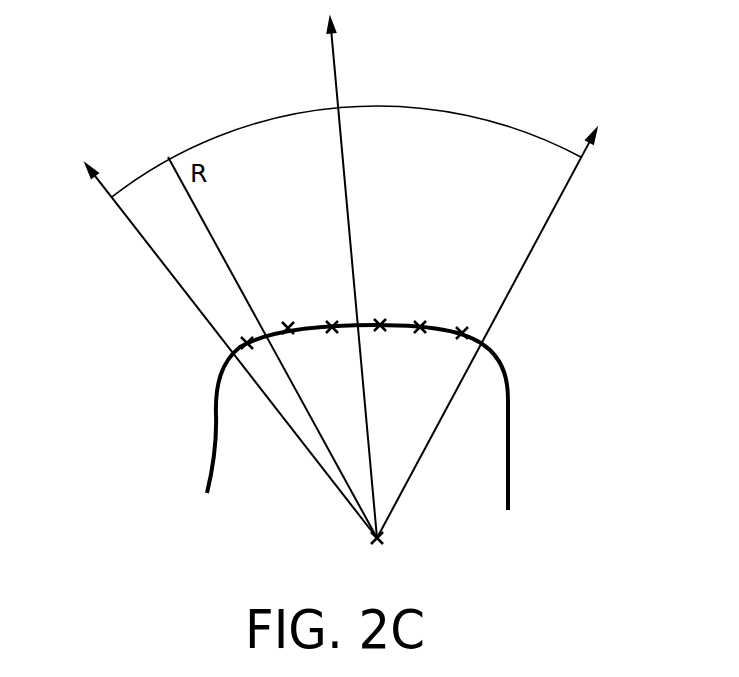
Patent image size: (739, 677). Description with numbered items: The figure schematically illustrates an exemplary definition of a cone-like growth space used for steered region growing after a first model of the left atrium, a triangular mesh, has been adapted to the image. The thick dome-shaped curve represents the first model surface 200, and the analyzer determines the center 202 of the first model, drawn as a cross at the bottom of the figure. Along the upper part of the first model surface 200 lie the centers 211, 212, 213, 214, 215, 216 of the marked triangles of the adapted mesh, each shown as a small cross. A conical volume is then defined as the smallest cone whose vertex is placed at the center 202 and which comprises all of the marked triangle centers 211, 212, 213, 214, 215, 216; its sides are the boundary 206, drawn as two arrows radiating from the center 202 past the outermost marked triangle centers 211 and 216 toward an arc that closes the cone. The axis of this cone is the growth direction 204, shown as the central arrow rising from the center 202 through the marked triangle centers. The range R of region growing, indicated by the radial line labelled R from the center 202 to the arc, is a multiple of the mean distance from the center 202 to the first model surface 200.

The first model surface 200 is at (213, 447).
The center 202 is at (371, 540).
The growth direction 204 is at (333, 57).
The boundary 206 is at (144, 245).
The marked triangle center 211 is at (247, 341).
The marked triangle center 212 is at (286, 323).
The marked triangle center 213 is at (332, 321).
The marked triangle center 214 is at (381, 319).
The marked triangle center 215 is at (484, 118).
The marked triangle center 216 is at (463, 327).